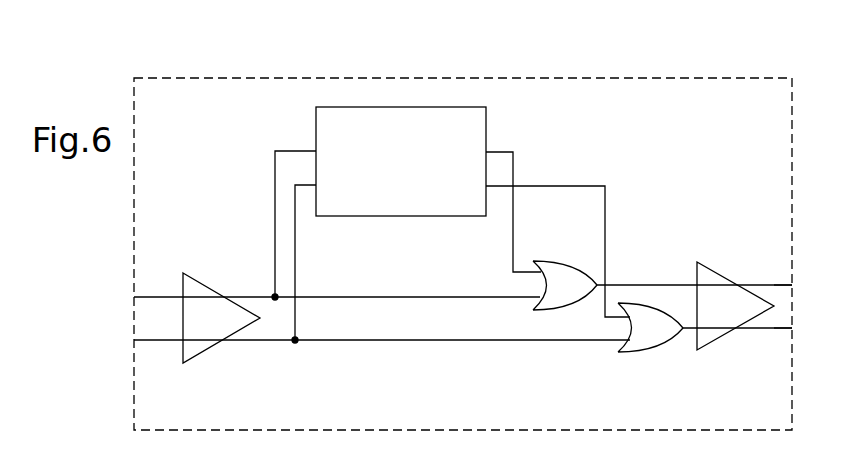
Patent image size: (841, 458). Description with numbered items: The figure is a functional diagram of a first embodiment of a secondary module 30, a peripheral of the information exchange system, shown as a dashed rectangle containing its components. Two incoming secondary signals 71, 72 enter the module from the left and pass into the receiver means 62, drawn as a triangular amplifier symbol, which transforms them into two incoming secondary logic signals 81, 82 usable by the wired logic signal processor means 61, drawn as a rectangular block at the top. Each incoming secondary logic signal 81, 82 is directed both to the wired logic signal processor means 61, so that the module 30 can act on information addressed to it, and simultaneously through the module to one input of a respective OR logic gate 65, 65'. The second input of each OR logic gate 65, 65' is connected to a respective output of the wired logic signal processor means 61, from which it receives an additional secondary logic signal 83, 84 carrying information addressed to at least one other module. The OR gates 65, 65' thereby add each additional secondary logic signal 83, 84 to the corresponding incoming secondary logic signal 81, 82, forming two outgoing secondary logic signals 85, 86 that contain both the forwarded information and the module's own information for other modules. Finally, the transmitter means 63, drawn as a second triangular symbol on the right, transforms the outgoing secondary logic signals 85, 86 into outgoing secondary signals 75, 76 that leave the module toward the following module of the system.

The secondary module 30 is at (668, 78).
The wired logic signal processor means 61 is at (405, 107).
The receiver means 62 is at (208, 332).
The transmitter means 63 is at (717, 336).
The OR logic gate 65 is at (563, 322).
The OR logic gate 65' is at (644, 359).
The incoming secondary signal 71 is at (155, 296).
The incoming secondary signal 72 is at (155, 342).
The outgoing secondary signal 75 is at (773, 284).
The outgoing secondary signal 76 is at (777, 329).
The incoming secondary logic signal 81 is at (275, 202).
The incoming secondary logic signal 82 is at (295, 276).
The additional secondary logic signal 83 is at (498, 151).
The additional secondary logic signal 84 is at (582, 185).
The outgoing secondary logic signal 85 is at (618, 285).
The outgoing secondary logic signal 86 is at (690, 327).